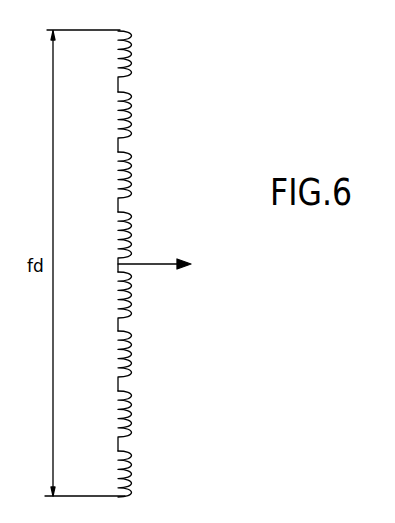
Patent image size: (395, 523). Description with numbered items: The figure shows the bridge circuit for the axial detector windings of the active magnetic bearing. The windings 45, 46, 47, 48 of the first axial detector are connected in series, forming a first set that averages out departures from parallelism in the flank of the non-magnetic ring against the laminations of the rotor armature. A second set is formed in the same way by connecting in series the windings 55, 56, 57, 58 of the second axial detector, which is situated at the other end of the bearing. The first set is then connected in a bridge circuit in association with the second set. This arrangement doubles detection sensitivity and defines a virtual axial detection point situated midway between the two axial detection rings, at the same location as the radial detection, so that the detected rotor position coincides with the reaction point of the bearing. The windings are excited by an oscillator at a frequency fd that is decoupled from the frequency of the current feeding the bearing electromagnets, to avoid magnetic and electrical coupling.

The winding 45 is at (132, 53).
The winding 46 is at (132, 123).
The winding 47 is at (132, 183).
The winding 48 is at (132, 228).
The winding 55 is at (131, 307).
The winding 56 is at (132, 377).
The winding 57 is at (132, 437).
The winding 58 is at (132, 481).